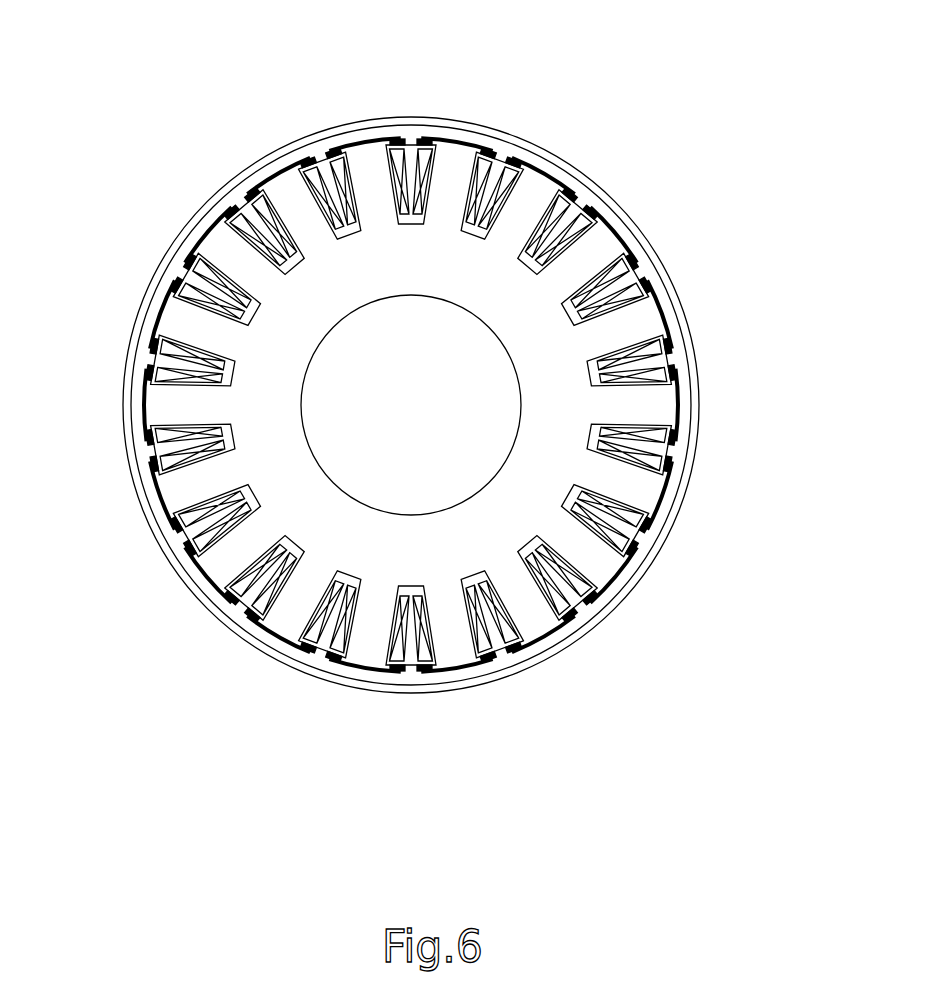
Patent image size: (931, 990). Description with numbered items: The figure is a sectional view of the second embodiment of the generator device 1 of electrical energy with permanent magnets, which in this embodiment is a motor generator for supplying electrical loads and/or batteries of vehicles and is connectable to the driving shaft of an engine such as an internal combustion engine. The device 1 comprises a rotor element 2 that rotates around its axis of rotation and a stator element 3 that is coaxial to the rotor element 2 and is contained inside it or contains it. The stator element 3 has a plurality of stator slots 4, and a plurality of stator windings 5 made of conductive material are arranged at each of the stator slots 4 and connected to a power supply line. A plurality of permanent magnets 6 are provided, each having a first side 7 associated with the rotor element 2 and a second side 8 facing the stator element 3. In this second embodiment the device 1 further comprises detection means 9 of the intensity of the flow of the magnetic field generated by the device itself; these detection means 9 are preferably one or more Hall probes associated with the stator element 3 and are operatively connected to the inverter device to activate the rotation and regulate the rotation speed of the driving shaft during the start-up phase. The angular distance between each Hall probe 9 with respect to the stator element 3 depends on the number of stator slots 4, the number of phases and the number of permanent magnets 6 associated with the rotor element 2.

The generator device 1 is at (758, 50).
The rotor element 2 is at (502, 145).
The stator element 3 is at (270, 348).
The stator slots 4 is at (417, 612).
The stator windings 5 is at (530, 652).
The permanent magnets 6 is at (212, 593).
The first side 7 is at (552, 177).
The second side 8 is at (498, 160).
The detection means 9 is at (675, 430).